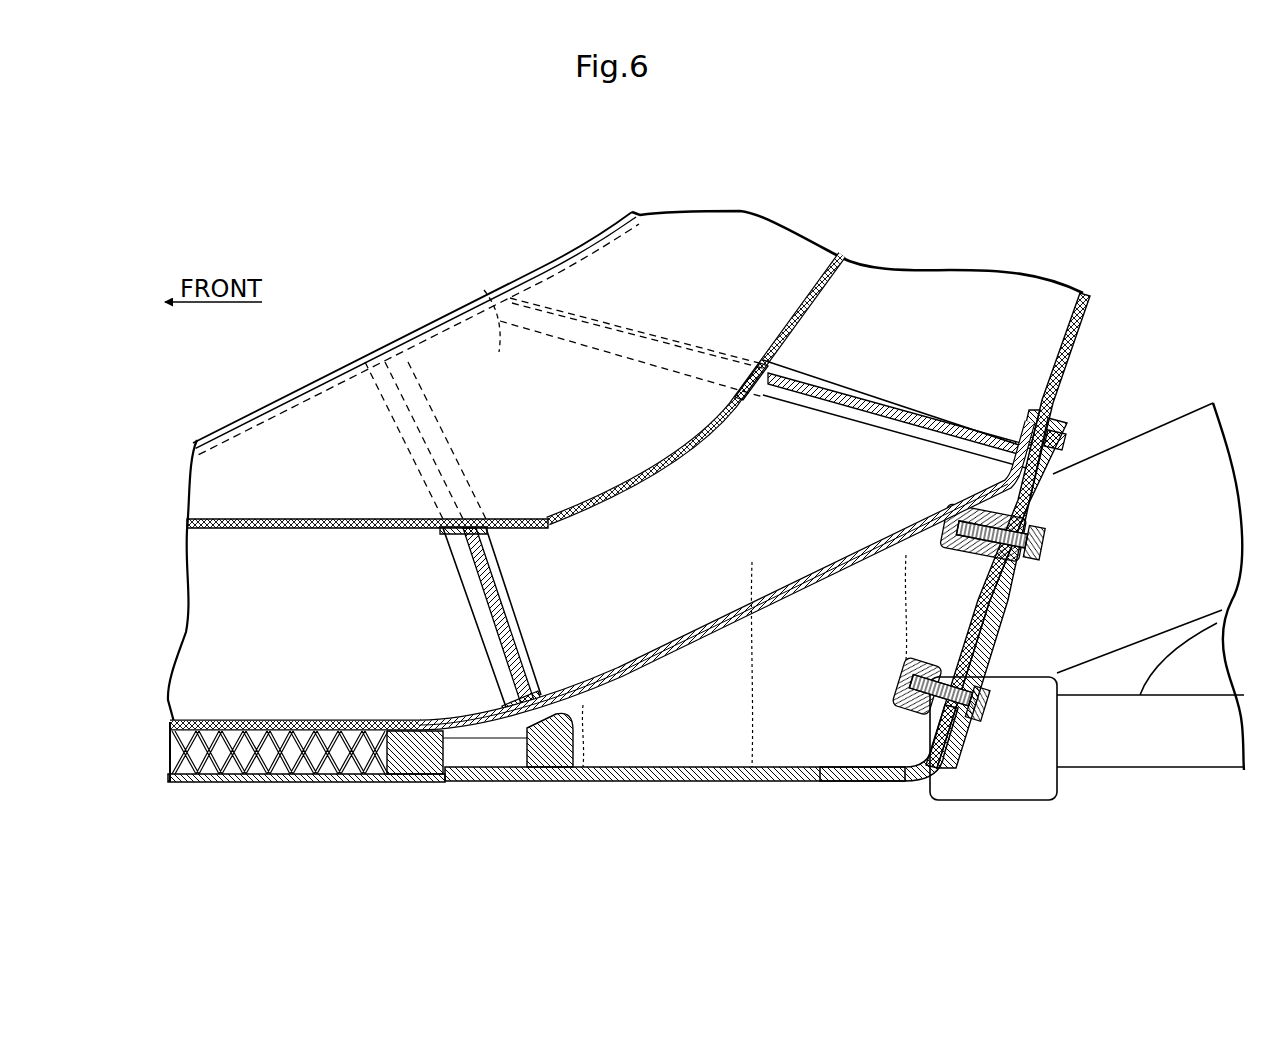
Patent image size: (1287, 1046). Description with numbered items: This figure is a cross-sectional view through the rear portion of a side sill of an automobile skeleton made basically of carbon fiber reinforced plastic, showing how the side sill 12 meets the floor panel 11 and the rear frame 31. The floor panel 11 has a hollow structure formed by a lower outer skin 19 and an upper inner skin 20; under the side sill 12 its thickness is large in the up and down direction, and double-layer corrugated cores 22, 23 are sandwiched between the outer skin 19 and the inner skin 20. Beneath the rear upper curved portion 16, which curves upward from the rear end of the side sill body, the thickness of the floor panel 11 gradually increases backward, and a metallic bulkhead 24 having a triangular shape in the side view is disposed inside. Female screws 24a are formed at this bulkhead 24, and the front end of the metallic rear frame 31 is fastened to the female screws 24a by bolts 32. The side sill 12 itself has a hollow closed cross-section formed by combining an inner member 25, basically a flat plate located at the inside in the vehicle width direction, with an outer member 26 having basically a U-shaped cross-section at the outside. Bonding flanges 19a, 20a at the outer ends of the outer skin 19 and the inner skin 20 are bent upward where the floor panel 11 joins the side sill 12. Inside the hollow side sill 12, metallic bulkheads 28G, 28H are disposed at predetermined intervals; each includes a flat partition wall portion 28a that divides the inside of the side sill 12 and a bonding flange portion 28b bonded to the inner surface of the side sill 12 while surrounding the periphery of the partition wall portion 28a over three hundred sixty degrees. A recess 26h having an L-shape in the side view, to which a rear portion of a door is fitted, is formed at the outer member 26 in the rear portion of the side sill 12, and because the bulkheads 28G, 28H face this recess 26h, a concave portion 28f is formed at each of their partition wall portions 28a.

The floor panel 11 is at (423, 783).
The side sill 12 is at (325, 365).
The rear upper curved portion 16 is at (548, 266).
The outer skin 19 is at (628, 783).
The bonding flange 19a is at (1055, 437).
The inner skin 20 is at (762, 592).
The bonding flange 20a is at (1055, 440).
The corrugated core 22 is at (279, 720).
The corrugated core 23 is at (280, 783).
The bulkhead 24 is at (745, 783).
The female screw 24a is at (958, 548).
The inner member 25 is at (425, 329).
The outer member 26 is at (815, 283).
The recess 26h is at (484, 290).
The bulkhead 28G is at (522, 612).
The bulkhead 28H is at (866, 375).
The partition wall portion 28a is at (884, 413).
The bonding flange portion 28b is at (1024, 432).
The concave portion 28f is at (760, 362).
The rear frame 31 is at (1153, 418).
The bolt 32 is at (1046, 556).